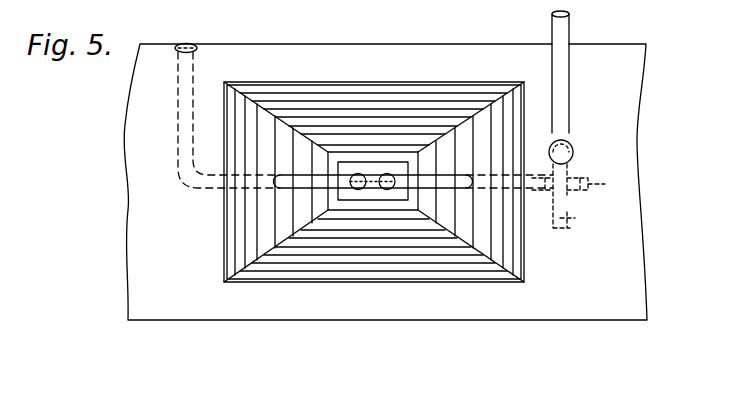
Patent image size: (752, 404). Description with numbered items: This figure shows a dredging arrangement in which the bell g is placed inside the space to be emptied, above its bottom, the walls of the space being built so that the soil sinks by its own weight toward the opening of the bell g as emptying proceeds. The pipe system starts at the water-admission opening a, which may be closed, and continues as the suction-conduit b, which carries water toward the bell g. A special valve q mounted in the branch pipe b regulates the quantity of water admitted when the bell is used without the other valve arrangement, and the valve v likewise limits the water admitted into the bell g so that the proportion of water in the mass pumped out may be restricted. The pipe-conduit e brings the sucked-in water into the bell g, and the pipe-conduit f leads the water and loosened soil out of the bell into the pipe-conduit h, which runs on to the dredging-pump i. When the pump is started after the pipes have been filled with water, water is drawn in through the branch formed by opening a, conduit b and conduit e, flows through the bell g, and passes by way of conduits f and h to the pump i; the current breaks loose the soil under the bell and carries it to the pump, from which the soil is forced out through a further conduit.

The water-admission opening a is at (190, 43).
The special valve q is at (196, 50).
The suction-conduit b is at (170, 106).
The pipe-conduit e is at (357, 175).
The pipe-conduit f is at (390, 176).
The bell g is at (370, 201).
The pipe-conduit h is at (462, 180).
The valve v is at (570, 83).
The dredging-pump i is at (570, 215).